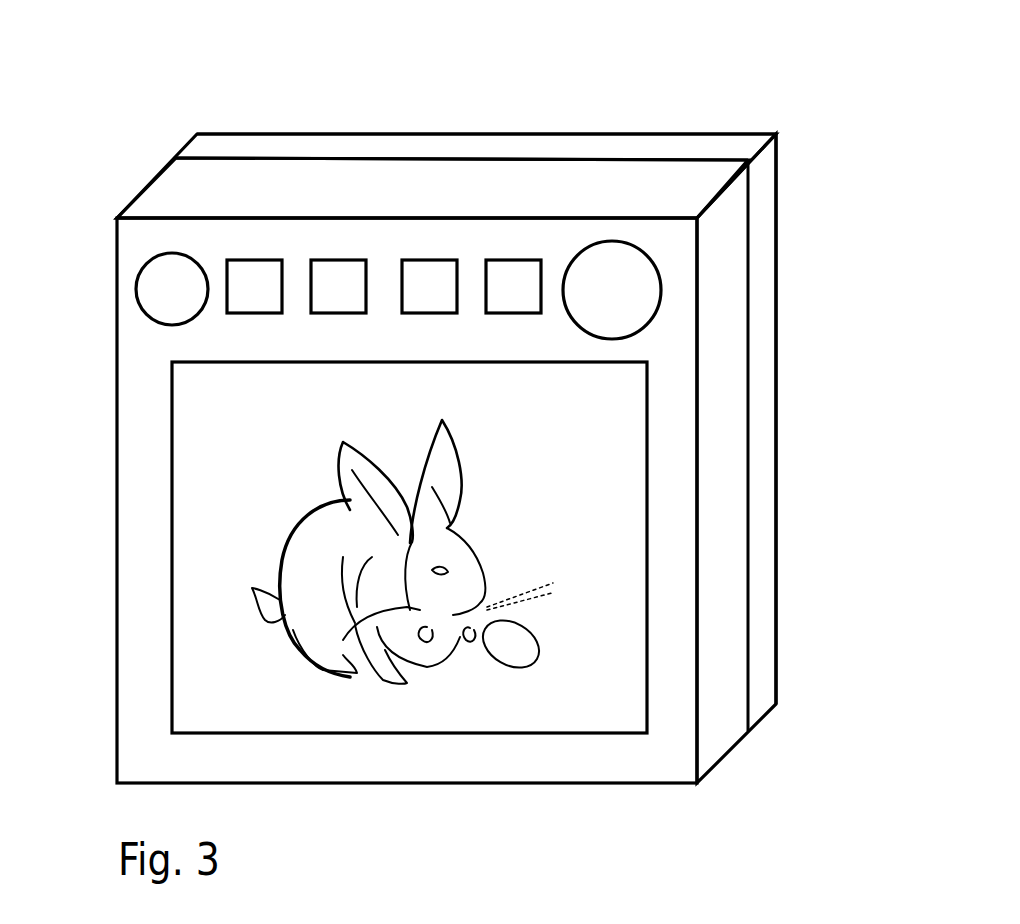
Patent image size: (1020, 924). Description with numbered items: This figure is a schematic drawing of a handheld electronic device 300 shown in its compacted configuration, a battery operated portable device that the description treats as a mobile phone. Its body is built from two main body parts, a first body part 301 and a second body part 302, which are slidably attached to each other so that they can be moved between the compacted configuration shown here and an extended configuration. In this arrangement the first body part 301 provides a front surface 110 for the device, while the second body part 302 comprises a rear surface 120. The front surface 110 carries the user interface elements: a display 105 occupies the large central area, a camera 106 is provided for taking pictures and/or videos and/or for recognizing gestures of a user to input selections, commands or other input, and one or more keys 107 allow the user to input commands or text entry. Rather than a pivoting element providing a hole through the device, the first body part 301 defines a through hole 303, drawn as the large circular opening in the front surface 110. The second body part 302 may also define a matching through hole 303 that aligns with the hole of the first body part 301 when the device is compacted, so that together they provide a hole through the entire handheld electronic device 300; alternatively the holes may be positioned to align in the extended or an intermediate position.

The toy device 300 is at (232, 100).
The first body part 301 is at (432, 119).
The second body part 302 is at (476, 90).
The through hole 303 is at (651, 180).
The display 105 is at (530, 485).
The camera 106 is at (120, 356).
The keys 107 is at (247, 313).
The front surface 110 is at (795, 445).
The rear surface 120 is at (772, 653).